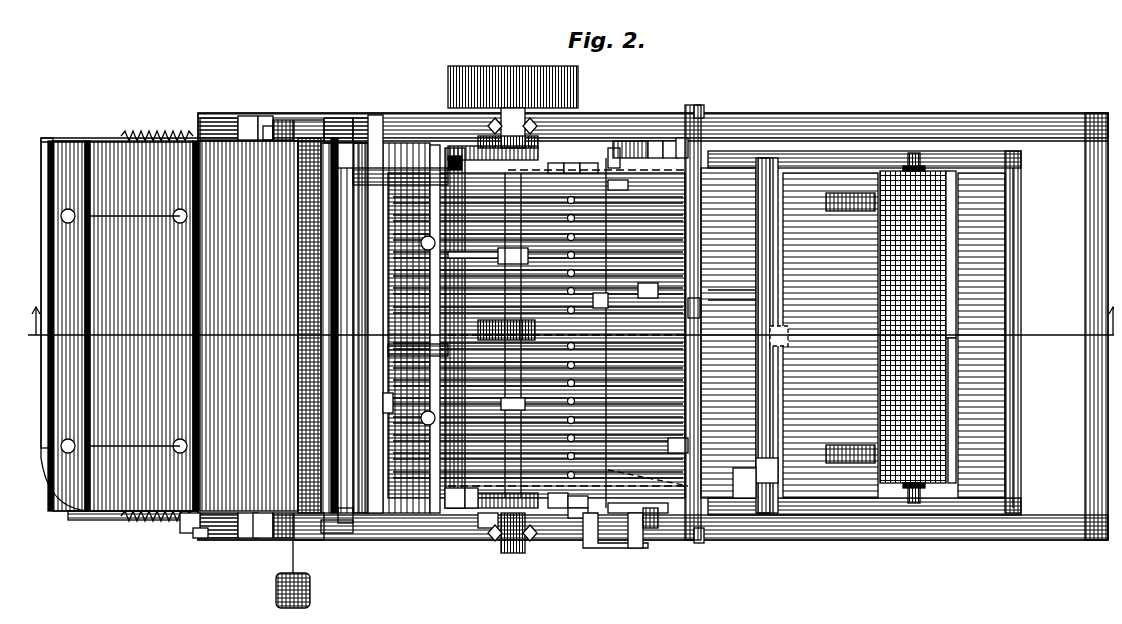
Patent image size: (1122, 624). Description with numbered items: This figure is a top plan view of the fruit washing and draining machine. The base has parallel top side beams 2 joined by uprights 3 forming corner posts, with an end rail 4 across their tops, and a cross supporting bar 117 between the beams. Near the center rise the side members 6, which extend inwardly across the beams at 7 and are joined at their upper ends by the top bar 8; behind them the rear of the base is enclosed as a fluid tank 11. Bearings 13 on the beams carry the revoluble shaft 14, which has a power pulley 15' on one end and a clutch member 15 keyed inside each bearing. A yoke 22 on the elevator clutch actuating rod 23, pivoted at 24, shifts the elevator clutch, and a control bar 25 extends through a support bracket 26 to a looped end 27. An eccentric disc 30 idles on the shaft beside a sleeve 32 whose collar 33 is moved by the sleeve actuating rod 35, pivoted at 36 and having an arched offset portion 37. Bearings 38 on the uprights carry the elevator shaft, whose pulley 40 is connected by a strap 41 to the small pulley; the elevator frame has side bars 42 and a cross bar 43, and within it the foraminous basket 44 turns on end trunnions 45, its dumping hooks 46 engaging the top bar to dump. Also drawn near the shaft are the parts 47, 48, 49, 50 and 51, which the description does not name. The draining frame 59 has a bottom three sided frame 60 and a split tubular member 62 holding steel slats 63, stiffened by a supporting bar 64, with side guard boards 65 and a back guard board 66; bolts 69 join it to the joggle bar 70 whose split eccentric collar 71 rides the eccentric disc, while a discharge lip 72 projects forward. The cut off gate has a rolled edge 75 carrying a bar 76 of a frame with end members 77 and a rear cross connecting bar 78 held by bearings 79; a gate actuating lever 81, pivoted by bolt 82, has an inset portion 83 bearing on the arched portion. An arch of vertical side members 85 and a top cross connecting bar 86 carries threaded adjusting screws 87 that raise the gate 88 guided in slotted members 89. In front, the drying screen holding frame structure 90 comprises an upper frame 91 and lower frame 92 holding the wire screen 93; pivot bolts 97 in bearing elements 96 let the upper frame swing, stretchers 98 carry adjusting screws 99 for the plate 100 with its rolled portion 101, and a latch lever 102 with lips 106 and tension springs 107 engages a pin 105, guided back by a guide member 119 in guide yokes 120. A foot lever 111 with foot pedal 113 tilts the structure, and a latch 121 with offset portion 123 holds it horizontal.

The top side beams 2 is at (790, 118).
The uprights 3 is at (565, 325).
The end rail 4 is at (1080, 203).
The side members 6 is at (690, 135).
The inward extension 7 is at (695, 125).
The top bar 8 is at (735, 432).
The fluid tank 11 is at (1045, 505).
The bearings 13 is at (525, 120).
The revoluble shaft 14 is at (505, 546).
The clutch member 15 is at (498, 353).
The power pulley 15' is at (513, 94).
The yoke 22 is at (552, 161).
The elevator clutch actuating rod 23 is at (570, 161).
The pivot 24 is at (589, 161).
The control bar 25 is at (578, 502).
The support bracket 26 is at (630, 541).
The looped end 27 is at (586, 540).
The eccentric disc 30 is at (490, 335).
The sleeve 32 is at (493, 396).
The collar 33 is at (672, 138).
The sleeve actuating rod 35 is at (638, 511).
The pivot 36 is at (680, 438).
The arched offset portion 37 is at (578, 515).
The bearings 38 is at (640, 521).
The pulley 40 is at (640, 280).
The strap 41 is at (602, 222).
The side bars 42 is at (858, 138).
The cross bar 43 is at (1004, 288).
The foraminous basket 44 is at (935, 275).
The end trunnions 45 is at (912, 150).
The dumping hooks 46 is at (855, 204).
The lever 47 is at (665, 140).
The lever 48 is at (648, 140).
The slide block 49 is at (645, 130).
The pin 50 is at (605, 150).
The link 51 is at (610, 180).
The draining frame 59 is at (770, 418).
The three sided frame 60 is at (750, 470).
The tubular member 62 is at (380, 375).
The steel slats 63 is at (748, 284).
The supporting bar 64 is at (560, 372).
The side guard boards 65 is at (768, 455).
The back guard board 66 is at (730, 155).
The bolts 69 is at (778, 338).
The joggle bar 70 is at (690, 300).
The split eccentric collar 71 is at (588, 290).
The discharge lip 72 is at (345, 512).
The rolled edge 75 is at (378, 395).
The bar 76 is at (368, 130).
The end members 77 is at (425, 160).
The rear cross connecting bar 78 is at (440, 247).
The bearings 79 is at (490, 250).
The gate actuating lever 81 is at (415, 500).
The bolt 82 is at (462, 500).
The inset portion 83 is at (548, 500).
The vertical side members 85 is at (448, 160).
The top cross connecting bar 86 is at (425, 190).
The threaded adjusting screws 87 is at (413, 235).
The gate 88 is at (430, 342).
The slotted members 89 is at (440, 155).
The drying screen holding frame structure 90 is at (32, 158).
The upper frame 91 is at (40, 193).
The lower frame 92 is at (330, 520).
The wire screen 93 is at (325, 135).
The bearing element 96 is at (307, 130).
The pivot bolts 97 is at (298, 120).
The stretchers 98 is at (180, 175).
The adjusting screws 99 is at (64, 205).
The plate 100 is at (92, 150).
The rolled portion 101 is at (270, 155).
The latch lever 102 is at (205, 125).
The pin 105 is at (250, 118).
The lips 106 is at (240, 108).
The tension springs 107 is at (160, 122).
The foot lever 111 is at (284, 548).
The foot pedal 113 is at (292, 598).
The cross supporting bar 117 is at (345, 125).
The guide member 119 is at (275, 118).
The guide yokes 120 is at (272, 110).
The latch 121 is at (188, 532).
The offset portion 123 is at (180, 525).